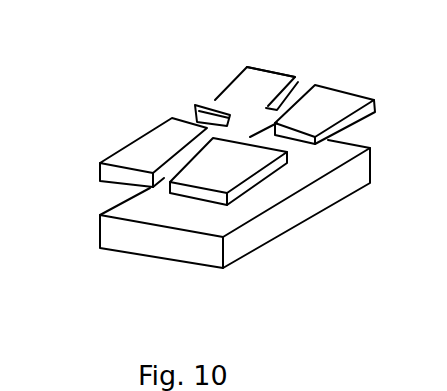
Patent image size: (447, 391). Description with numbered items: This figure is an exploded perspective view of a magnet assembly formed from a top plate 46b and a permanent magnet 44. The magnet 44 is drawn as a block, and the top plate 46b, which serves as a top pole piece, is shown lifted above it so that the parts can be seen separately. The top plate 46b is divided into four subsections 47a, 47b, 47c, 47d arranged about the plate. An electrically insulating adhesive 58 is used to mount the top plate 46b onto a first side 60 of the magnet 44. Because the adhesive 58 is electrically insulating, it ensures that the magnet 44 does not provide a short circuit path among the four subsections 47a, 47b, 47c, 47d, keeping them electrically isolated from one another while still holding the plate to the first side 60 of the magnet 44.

The magnet 44 is at (147, 237).
The first side of the magnet 60 is at (289, 197).
The electrically insulating adhesive 58 is at (318, 157).
The top plate 46b is at (225, 98).
The subsection 47a is at (165, 138).
The subsection 47b is at (250, 83).
The subsection 47c is at (335, 108).
The subsection 47d is at (234, 168).